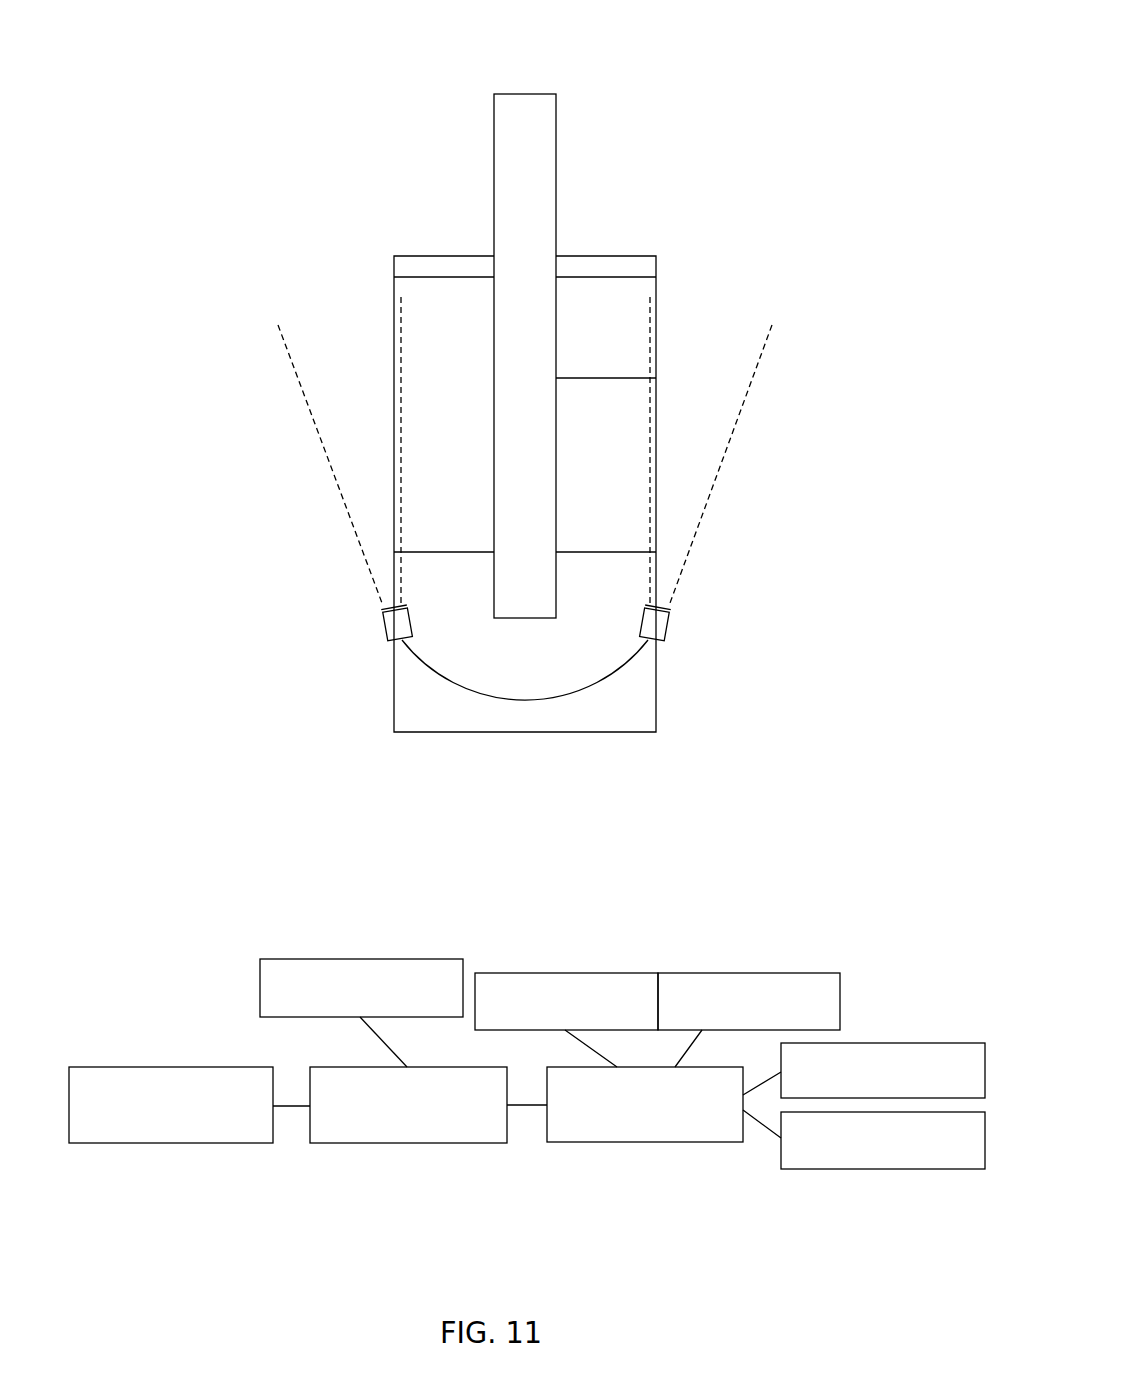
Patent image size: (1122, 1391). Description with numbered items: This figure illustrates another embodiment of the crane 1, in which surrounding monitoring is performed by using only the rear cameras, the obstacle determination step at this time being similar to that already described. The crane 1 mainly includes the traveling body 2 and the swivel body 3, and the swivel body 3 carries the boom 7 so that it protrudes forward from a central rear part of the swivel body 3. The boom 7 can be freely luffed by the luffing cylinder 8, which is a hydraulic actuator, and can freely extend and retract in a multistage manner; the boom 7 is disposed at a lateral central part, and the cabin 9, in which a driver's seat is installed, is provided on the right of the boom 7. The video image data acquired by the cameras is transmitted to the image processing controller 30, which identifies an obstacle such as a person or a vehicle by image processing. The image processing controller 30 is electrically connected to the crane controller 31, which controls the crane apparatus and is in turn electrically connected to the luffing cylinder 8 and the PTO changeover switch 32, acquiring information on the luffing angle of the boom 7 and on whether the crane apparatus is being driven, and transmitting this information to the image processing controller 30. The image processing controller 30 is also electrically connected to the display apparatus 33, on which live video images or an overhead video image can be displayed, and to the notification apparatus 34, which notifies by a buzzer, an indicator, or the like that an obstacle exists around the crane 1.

The crane 1 is at (237, 143).
The traveling body 2 is at (412, 229).
The swivel body 3 is at (413, 678).
The boom 7 is at (532, 103).
The luffing cylinder 8 is at (357, 960).
The cabin 9 is at (597, 378).
The image processing controller 30 is at (645, 1143).
The crane controller 31 is at (395, 1143).
The PTO changeover switch 32 is at (140, 1067).
The display apparatus 33 is at (885, 1045).
The notification apparatus 34 is at (883, 1168).